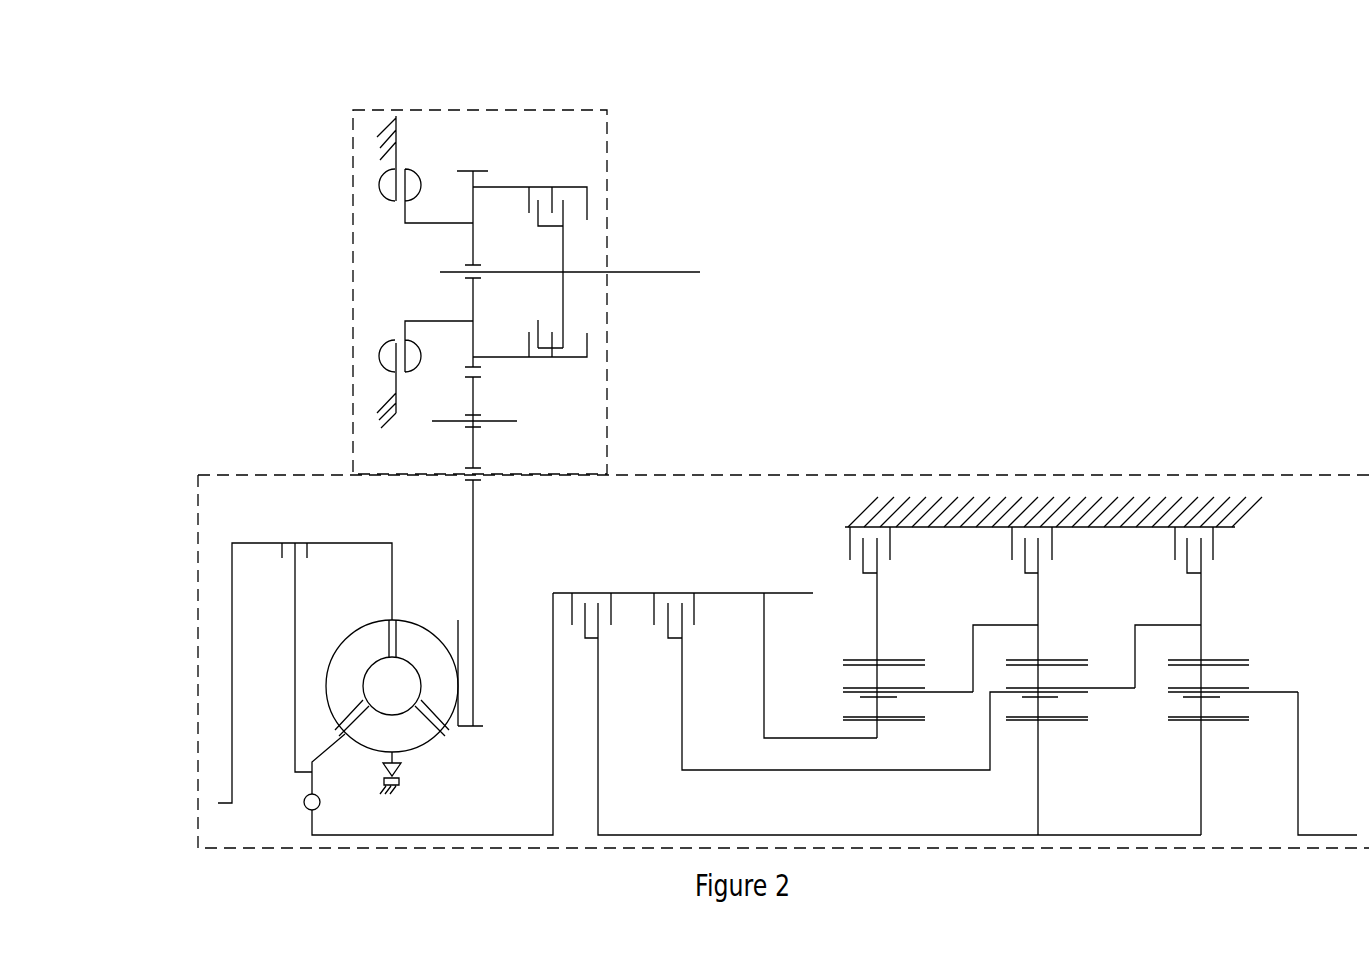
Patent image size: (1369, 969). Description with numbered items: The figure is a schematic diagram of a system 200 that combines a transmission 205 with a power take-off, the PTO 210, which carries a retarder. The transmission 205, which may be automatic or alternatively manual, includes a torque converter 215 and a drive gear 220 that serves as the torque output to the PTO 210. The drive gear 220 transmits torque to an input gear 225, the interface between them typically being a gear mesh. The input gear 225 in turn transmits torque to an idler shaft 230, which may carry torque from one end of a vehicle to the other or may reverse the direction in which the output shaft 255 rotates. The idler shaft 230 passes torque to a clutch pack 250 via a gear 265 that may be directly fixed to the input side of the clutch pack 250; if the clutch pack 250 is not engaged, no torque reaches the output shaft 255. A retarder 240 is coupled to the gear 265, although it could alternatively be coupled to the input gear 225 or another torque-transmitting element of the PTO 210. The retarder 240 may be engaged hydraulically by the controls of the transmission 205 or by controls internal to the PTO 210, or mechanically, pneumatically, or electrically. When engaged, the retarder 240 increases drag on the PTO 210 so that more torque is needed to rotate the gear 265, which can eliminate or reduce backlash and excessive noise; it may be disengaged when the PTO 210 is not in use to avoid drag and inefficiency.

The system 200 is at (139, 62).
The transmission 205 is at (197, 493).
The PTO 210 is at (352, 155).
The torque converter 215 is at (343, 631).
The drive gear 220 is at (478, 491).
The input gear 225 is at (478, 390).
The idler shaft 230 is at (446, 424).
The retarder 240 is at (379, 354).
The clutch pack 250 is at (569, 292).
The output shaft 255 is at (699, 270).
The gear 265 is at (472, 305).